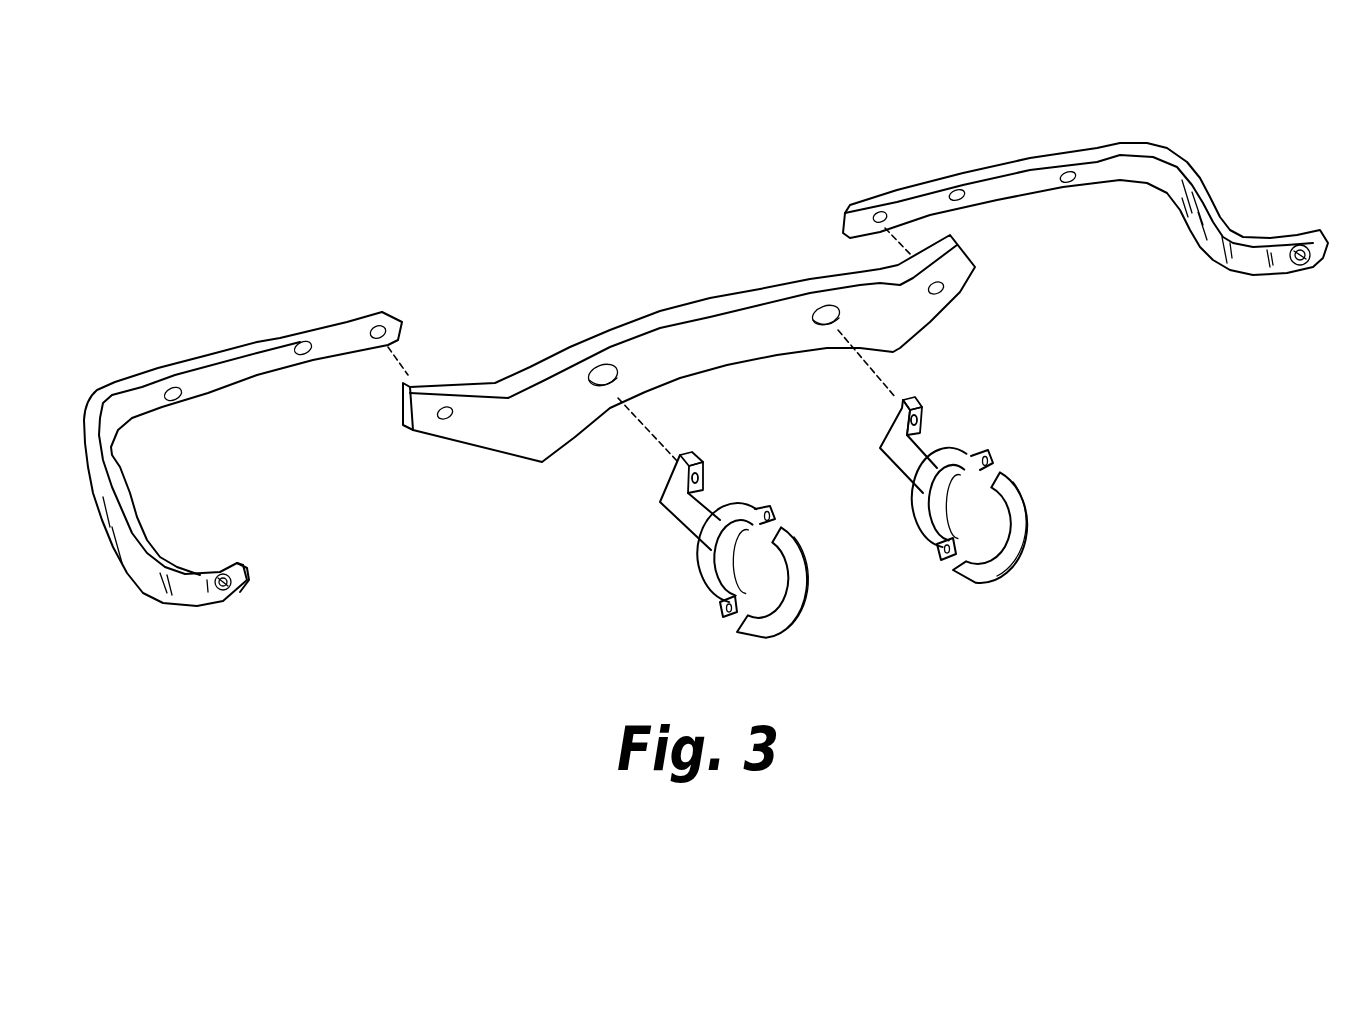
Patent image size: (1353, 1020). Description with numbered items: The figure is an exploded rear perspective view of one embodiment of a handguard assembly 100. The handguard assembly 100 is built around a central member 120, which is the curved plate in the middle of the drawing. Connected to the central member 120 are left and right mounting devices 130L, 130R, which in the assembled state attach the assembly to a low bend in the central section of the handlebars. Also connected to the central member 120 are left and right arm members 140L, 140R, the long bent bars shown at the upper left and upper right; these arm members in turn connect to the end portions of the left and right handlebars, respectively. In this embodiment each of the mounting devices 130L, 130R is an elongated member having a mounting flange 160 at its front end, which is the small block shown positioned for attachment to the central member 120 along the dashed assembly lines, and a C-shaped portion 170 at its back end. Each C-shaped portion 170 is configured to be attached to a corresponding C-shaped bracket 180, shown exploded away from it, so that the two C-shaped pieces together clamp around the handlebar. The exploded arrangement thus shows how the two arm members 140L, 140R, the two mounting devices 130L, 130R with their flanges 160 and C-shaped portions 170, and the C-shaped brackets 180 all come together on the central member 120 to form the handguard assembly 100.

The handguard assembly 100 is at (222, 181).
The central member 120 is at (690, 311).
The left mounting device 130L is at (680, 508).
The right mounting device 130R is at (930, 452).
The left arm member 140L is at (270, 335).
The right arm member 140R is at (953, 178).
The mounting flange 160 is at (903, 399).
The C-shaped portion 170 is at (710, 590).
The C-shaped bracket 180 is at (960, 575).